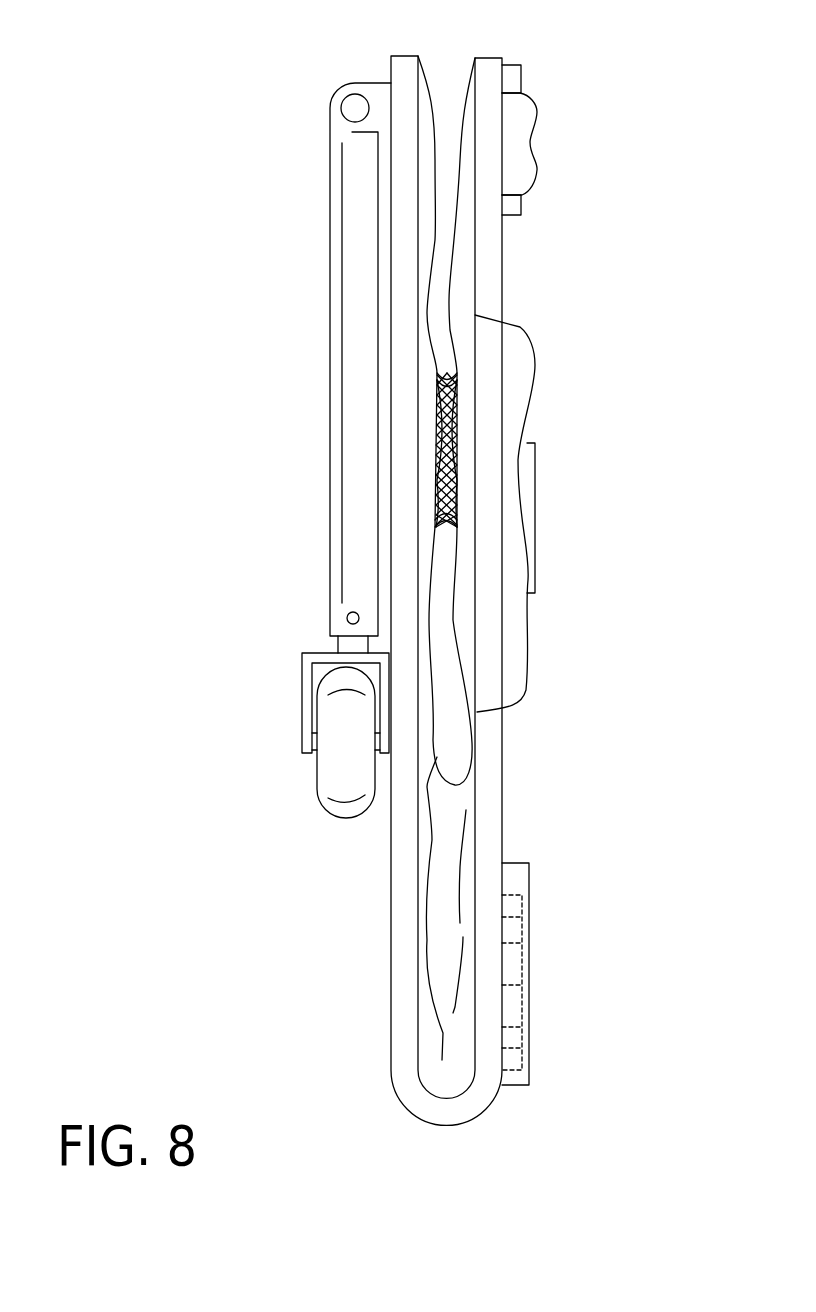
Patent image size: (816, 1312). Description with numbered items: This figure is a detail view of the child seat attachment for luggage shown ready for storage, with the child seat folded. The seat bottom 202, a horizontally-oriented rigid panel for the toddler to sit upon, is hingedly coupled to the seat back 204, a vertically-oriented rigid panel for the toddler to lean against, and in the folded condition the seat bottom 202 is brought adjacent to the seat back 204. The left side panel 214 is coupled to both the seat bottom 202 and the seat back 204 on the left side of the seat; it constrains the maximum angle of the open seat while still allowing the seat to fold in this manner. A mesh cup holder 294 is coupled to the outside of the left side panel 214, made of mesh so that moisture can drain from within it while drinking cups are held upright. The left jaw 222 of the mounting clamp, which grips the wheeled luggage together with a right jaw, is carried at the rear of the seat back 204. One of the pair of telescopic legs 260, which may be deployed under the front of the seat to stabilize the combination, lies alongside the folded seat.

The seat bottom 202 is at (392, 889).
The seat back 204 is at (490, 770).
The left side panel 214 is at (457, 810).
The left jaw 222 is at (538, 863).
The telescopic legs 260 is at (342, 493).
The mesh cup holders 294 is at (452, 418).